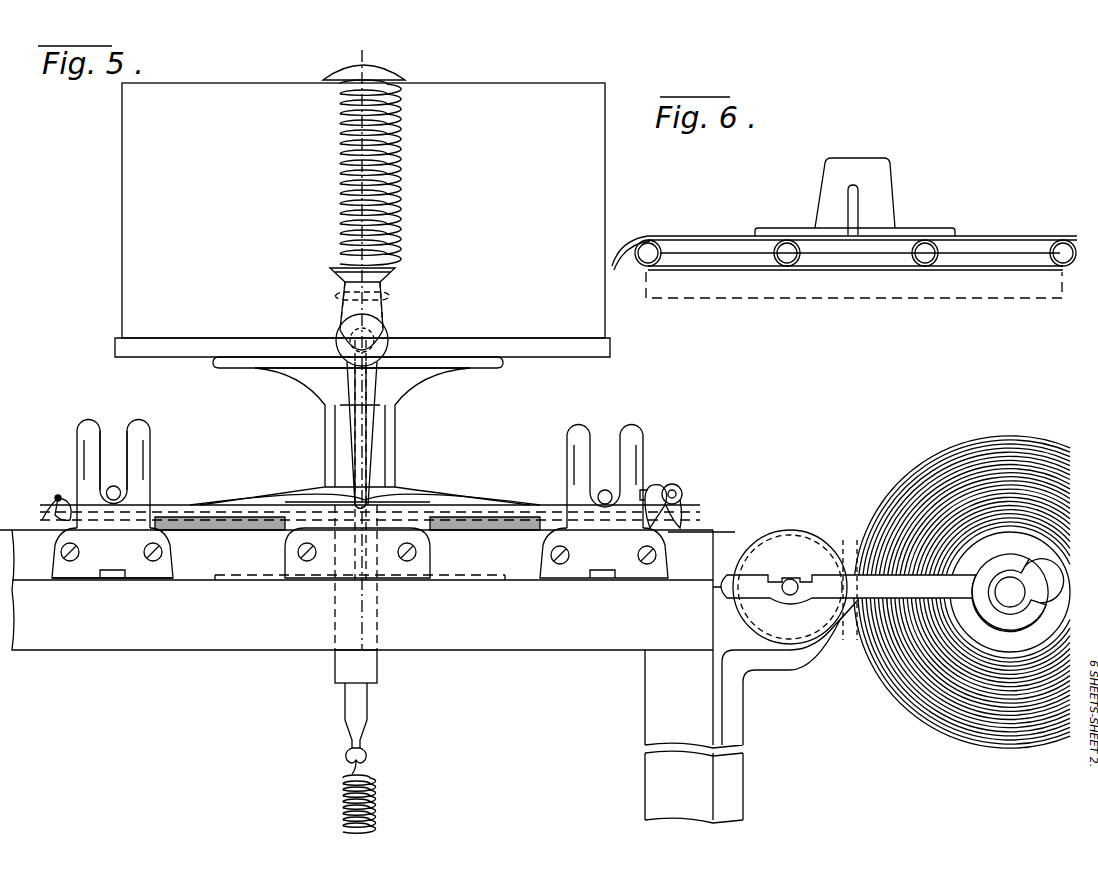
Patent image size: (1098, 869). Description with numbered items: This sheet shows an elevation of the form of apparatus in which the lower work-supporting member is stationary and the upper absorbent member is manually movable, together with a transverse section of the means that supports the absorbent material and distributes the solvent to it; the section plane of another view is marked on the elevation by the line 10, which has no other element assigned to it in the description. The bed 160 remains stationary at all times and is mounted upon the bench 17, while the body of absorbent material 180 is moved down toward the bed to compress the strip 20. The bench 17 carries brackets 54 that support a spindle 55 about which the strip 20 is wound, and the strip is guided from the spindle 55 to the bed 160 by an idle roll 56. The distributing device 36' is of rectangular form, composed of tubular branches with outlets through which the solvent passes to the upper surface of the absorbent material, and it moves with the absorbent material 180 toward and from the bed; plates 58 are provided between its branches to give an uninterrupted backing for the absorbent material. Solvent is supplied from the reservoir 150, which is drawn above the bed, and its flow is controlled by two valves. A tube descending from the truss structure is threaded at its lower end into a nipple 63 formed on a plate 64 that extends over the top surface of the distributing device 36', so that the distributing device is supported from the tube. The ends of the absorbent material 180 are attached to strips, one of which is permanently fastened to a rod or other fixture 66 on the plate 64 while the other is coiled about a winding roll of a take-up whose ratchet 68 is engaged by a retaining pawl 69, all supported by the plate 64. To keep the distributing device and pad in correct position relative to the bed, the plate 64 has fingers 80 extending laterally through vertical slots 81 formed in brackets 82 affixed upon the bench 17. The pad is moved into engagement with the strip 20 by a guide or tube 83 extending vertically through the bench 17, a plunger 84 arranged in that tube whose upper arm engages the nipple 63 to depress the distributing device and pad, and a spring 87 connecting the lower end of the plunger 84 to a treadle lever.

In FIG. 5, the screw and spring / rod 10 is at (362, 66).
In FIG. 5, the bench 17 is at (377, 676).
In FIG. 5, the strip 20 is at (716, 531).
In FIG. 5, the brackets 54 is at (826, 645).
In FIG. 5, the spindle 55 is at (1013, 585).
In FIG. 5, the idle roll 56 is at (795, 560).
In FIG. 6, the plates 58 is at (852, 270).
In FIG. 6, the nipple 63 is at (893, 191).
In FIG. 6, the plate 64 is at (1010, 237).
In FIG. 6, the distributing device 36' is at (860, 223).
In FIG. 5, the rod or other fixture 66 is at (56, 497).
In FIG. 5, the ratchet 68 is at (680, 487).
In FIG. 5, the retaining pawl 69 is at (655, 486).
In FIG. 5, the fingers 80 is at (117, 490).
In FIG. 5, the vertical slots 81 is at (113, 465).
In FIG. 5, the brackets 82 is at (78, 470).
In FIG. 5, the guide or tube 83 is at (378, 677).
In FIG. 5, the plunger 84 is at (344, 708).
In FIG. 5, the spring 87 is at (372, 800).
In FIG. 5, the reservoir 150 is at (121, 226).
In FIG. 5, the bed 160 is at (190, 535).
In FIG. 5, the absorbent material 180 is at (513, 530).
In FIG. 6, the absorbent material 180 is at (812, 300).